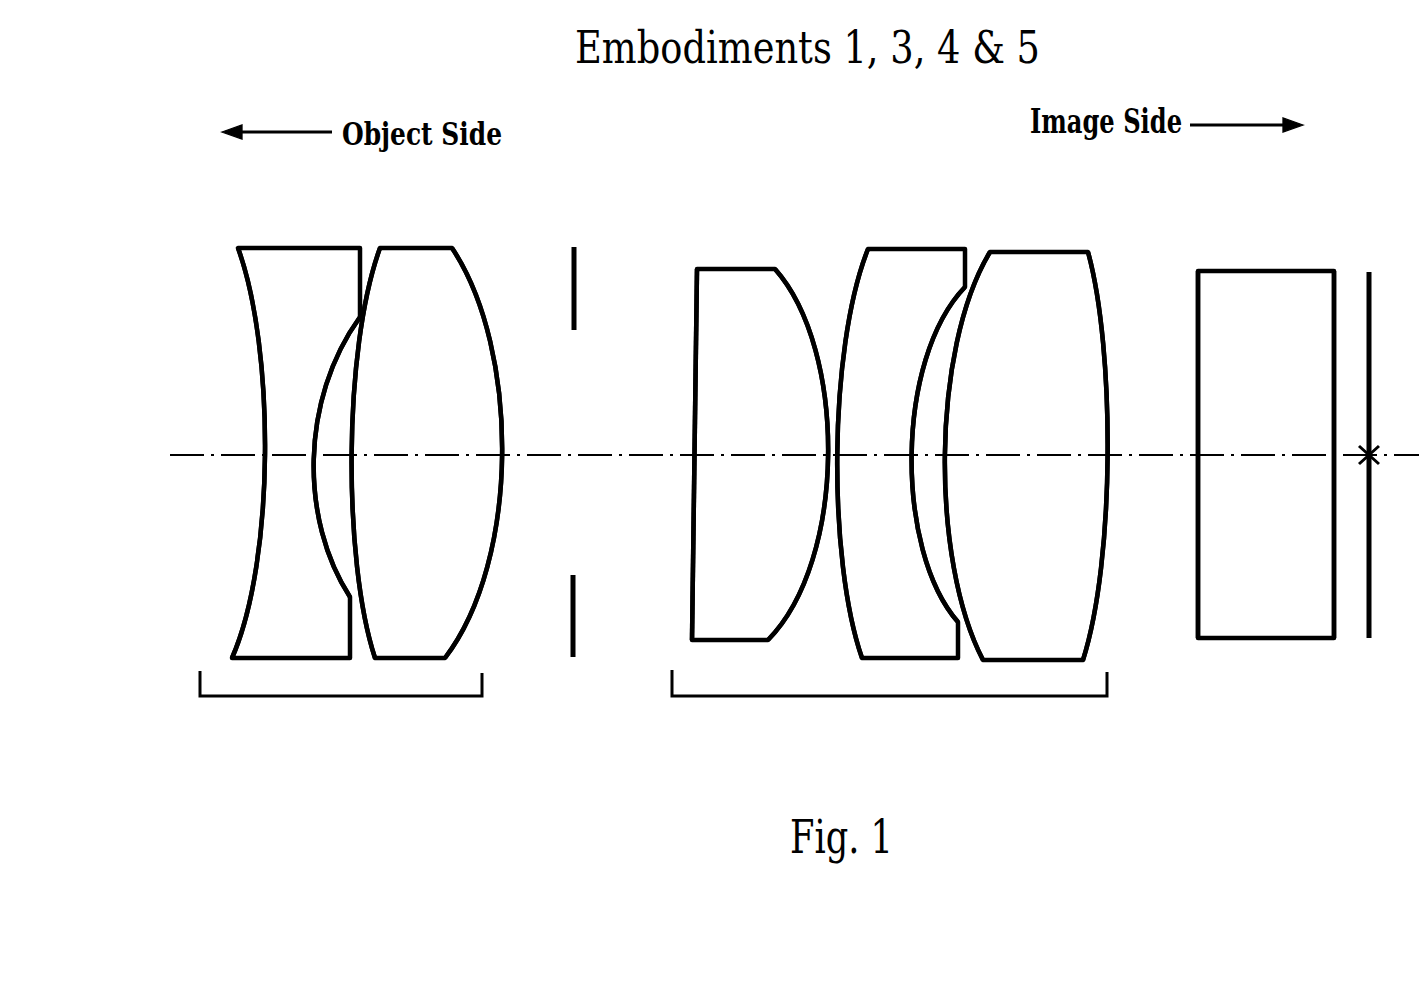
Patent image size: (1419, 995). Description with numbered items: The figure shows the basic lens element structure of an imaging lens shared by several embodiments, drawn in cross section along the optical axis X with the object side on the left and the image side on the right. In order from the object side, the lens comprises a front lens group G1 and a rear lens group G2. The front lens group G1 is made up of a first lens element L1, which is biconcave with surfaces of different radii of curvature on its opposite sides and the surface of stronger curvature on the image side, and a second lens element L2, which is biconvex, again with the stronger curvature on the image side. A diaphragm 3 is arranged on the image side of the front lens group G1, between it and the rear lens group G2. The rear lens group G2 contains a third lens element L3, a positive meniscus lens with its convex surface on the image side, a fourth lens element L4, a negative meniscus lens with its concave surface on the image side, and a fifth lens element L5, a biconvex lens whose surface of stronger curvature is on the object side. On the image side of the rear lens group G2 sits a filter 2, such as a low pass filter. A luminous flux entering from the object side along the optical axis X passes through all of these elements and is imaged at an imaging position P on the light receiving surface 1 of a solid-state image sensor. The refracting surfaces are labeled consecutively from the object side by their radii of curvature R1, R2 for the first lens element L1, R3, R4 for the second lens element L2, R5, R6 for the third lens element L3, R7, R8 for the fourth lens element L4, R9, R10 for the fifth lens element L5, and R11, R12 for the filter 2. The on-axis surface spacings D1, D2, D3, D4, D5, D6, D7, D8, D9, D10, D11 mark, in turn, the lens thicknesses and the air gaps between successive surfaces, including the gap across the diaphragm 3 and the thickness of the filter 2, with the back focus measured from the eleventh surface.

The light receiving surface 1 is at (1375, 273).
The filter 2 is at (1235, 286).
The diaphragm 3 is at (573, 260).
The first lens element L1 is at (286, 263).
The second lens element L2 is at (424, 263).
The third lens element L3 is at (738, 269).
The fourth lens element L4 is at (925, 263).
The fifth lens element L5 is at (1050, 263).
The front lens group G1 is at (372, 470).
The rear lens group G2 is at (909, 468).
The radius of curvature of surface 1 R1 is at (256, 340).
The radius of curvature of surface 2 R2 is at (340, 358).
The radius of curvature of surface 3 R3 is at (353, 388).
The radius of curvature of surface 4 R4 is at (496, 340).
The radius of curvature of surface 5 R5 is at (697, 357).
The radius of curvature of surface 6 R6 is at (798, 303).
The radius of curvature of surface 7 R7 is at (850, 336).
The radius of curvature of surface 8 R8 is at (915, 406).
The radius of curvature of surface 9 R9 is at (956, 366).
The radius of curvature of surface 10 R10 is at (1108, 306).
The radius of curvature of surface 11 R11 is at (1198, 349).
The radius of curvature of surface 12 R12 is at (1336, 285).
The on-axis surface spacing 1 D1 is at (283, 459).
The on-axis surface spacing 2 D2 is at (335, 459).
The on-axis surface spacing 3 D3 is at (437, 459).
The on-axis surface spacing 4 D4 is at (565, 459).
The on-axis surface spacing 5 D5 is at (757, 459).
The on-axis surface spacing 6 D6 is at (835, 459).
The on-axis surface spacing 7 D7 is at (880, 459).
The on-axis surface spacing 8 D8 is at (928, 459).
The on-axis surface spacing 9 D9 is at (1037, 459).
The on-axis surface spacing 10 D10 is at (1155, 459).
The on-axis surface spacing 11 D11 is at (1253, 459).
The optical axis X is at (205, 459).
The imaging position P is at (1379, 465).